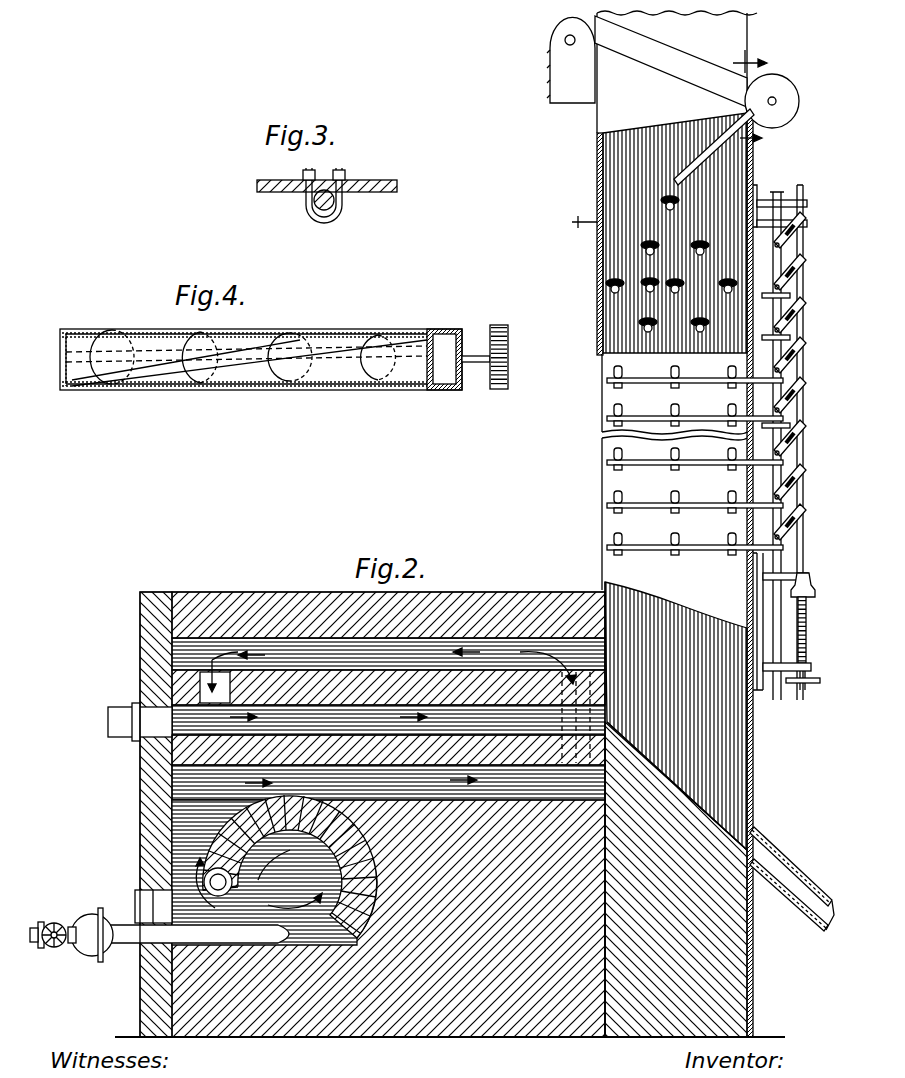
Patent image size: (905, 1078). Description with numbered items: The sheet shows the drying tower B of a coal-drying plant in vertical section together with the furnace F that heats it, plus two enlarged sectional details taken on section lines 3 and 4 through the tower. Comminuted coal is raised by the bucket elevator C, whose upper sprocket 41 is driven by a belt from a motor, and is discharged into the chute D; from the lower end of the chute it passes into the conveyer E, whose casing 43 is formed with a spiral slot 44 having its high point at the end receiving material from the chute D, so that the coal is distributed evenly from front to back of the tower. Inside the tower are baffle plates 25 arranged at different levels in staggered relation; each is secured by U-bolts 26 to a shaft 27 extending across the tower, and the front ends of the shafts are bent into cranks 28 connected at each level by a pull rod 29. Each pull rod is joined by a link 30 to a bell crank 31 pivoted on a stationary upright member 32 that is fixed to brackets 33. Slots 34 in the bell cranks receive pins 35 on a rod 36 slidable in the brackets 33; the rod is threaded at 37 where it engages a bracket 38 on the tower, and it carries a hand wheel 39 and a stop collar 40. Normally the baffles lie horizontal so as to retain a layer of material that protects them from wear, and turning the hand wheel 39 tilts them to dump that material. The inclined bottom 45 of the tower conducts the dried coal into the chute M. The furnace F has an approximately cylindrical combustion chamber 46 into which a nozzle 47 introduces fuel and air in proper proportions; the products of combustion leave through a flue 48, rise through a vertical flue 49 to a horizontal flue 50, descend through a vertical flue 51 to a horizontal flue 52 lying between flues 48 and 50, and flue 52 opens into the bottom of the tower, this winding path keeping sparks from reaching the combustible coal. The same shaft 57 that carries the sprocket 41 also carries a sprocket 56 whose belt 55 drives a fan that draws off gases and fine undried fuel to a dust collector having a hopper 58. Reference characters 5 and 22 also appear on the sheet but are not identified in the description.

In FIG. 2, the section line 3 is at (622, 283).
In FIG. 2, the section line 4 is at (751, 100).
In FIG. 2, the drying tower 5 is at (575, 225).
In FIG. 2, the bolt fixture 22 is at (678, 198).
In FIG. 3, the baffle plates 25 is at (378, 179).
In FIG. 3, the U-bolts 26 is at (346, 203).
In FIG. 3, the shafts 27 is at (320, 212).
In FIG. 2, the cranks 28 is at (675, 470).
In FIG. 2, the pull rod 29 is at (740, 466).
In FIG. 2, the link 30 is at (773, 306).
In FIG. 2, the bell crank 31 is at (816, 375).
In FIG. 2, the stationary upright member 32 is at (782, 202).
In FIG. 2, the brackets 33 is at (760, 195).
In FIG. 2, the slots 34 is at (800, 374).
In FIG. 2, the pins 35 is at (812, 442).
In FIG. 2, the rod 36 is at (820, 497).
In FIG. 2, the threaded lower end 37 is at (795, 622).
In FIG. 2, the bracket 38 is at (778, 668).
In FIG. 2, the hand wheel 39 is at (803, 689).
In FIG. 2, the stop collar 40 is at (808, 582).
In FIG. 2, the upper sprocket 41 is at (562, 30).
In FIG. 4, the casing 43 is at (235, 334).
In FIG. 4, the spiral slot 44 is at (352, 345).
In FIG. 2, the inclined tower bottom 45 is at (690, 778).
In FIG. 2, the combustion chamber 46 is at (232, 850).
In FIG. 2, the nozzle 47 is at (130, 920).
In FIG. 2, the flue 48 is at (432, 790).
In FIG. 2, the vertical flue 49 is at (610, 732).
In FIG. 2, the horizontal flue 50 is at (318, 650).
In FIG. 2, the vertical flue 51 is at (200, 683).
In FIG. 2, the horizontal flue 52 is at (205, 718).
In FIG. 2, the belt 55 is at (671, 279).
In FIG. 2, the sprocket 56 is at (650, 240).
In FIG. 2, the shaft 57 is at (652, 318).
In FIG. 2, the hopper 58 is at (704, 318).
In FIG. 2, the drying tower B is at (603, 494).
In FIG. 2, the bucket elevator C is at (571, 90).
In FIG. 2, the chute D is at (641, 52).
In FIG. 4, the chute D is at (440, 327).
In FIG. 2, the conveyer E is at (781, 80).
In FIG. 4, the conveyer E is at (318, 387).
In FIG. 2, the furnace F is at (416, 1010).
In FIG. 2, the chute M is at (790, 858).